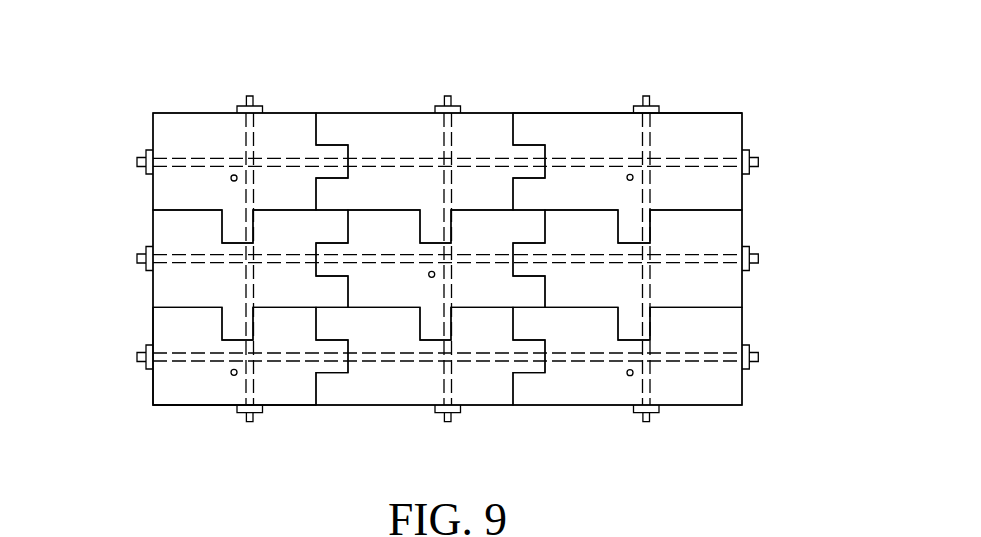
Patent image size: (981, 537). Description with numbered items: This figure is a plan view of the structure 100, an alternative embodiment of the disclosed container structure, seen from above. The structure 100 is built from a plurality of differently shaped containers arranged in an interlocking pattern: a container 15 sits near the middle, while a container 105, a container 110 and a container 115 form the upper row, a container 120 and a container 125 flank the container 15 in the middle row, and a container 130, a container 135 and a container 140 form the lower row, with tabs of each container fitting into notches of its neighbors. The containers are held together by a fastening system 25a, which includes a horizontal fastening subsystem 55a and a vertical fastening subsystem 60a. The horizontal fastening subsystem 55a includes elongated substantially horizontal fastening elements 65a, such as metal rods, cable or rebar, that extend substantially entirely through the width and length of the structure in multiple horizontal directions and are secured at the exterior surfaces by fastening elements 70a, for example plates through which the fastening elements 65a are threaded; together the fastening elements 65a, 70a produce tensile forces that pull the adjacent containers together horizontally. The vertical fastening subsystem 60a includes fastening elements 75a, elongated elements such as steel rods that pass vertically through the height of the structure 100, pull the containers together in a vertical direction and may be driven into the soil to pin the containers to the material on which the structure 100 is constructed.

The container 15 is at (467, 243).
The fastening system 25a is at (114, 415).
The horizontal fastening subsystem 55a is at (137, 425).
The vertical fastening subsystem 60a is at (712, 55).
The fastening element 65a is at (451, 130).
The fastening element 70a is at (460, 110).
The fastening element 75a is at (630, 177).
The structure 100 is at (578, 58).
The container 105 is at (215, 130).
The container 110 is at (397, 130).
The container 115 is at (587, 125).
The container 120 is at (170, 237).
The container 125 is at (728, 238).
The container 130 is at (163, 377).
The container 135 is at (403, 385).
The container 140 is at (718, 390).